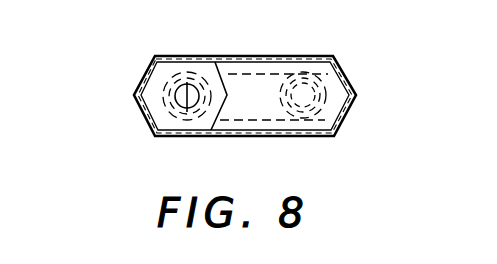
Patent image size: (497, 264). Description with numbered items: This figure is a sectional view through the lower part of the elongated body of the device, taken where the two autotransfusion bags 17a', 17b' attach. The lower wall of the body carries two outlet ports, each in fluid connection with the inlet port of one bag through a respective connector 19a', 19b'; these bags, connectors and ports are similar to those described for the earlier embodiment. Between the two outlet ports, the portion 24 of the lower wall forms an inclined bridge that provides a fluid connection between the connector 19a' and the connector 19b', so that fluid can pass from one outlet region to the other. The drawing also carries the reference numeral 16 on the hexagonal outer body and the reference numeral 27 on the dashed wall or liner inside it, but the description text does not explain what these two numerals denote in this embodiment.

The hexagonal housing body 16 is at (154, 73).
The autotransfusion bag 17a' is at (174, 62).
The autotransfusion bag 17b' is at (352, 85).
The connector 19a' is at (139, 127).
The connector 19b' is at (358, 112).
The portion of the lower wall 24 is at (240, 84).
The liner 27 is at (284, 60).